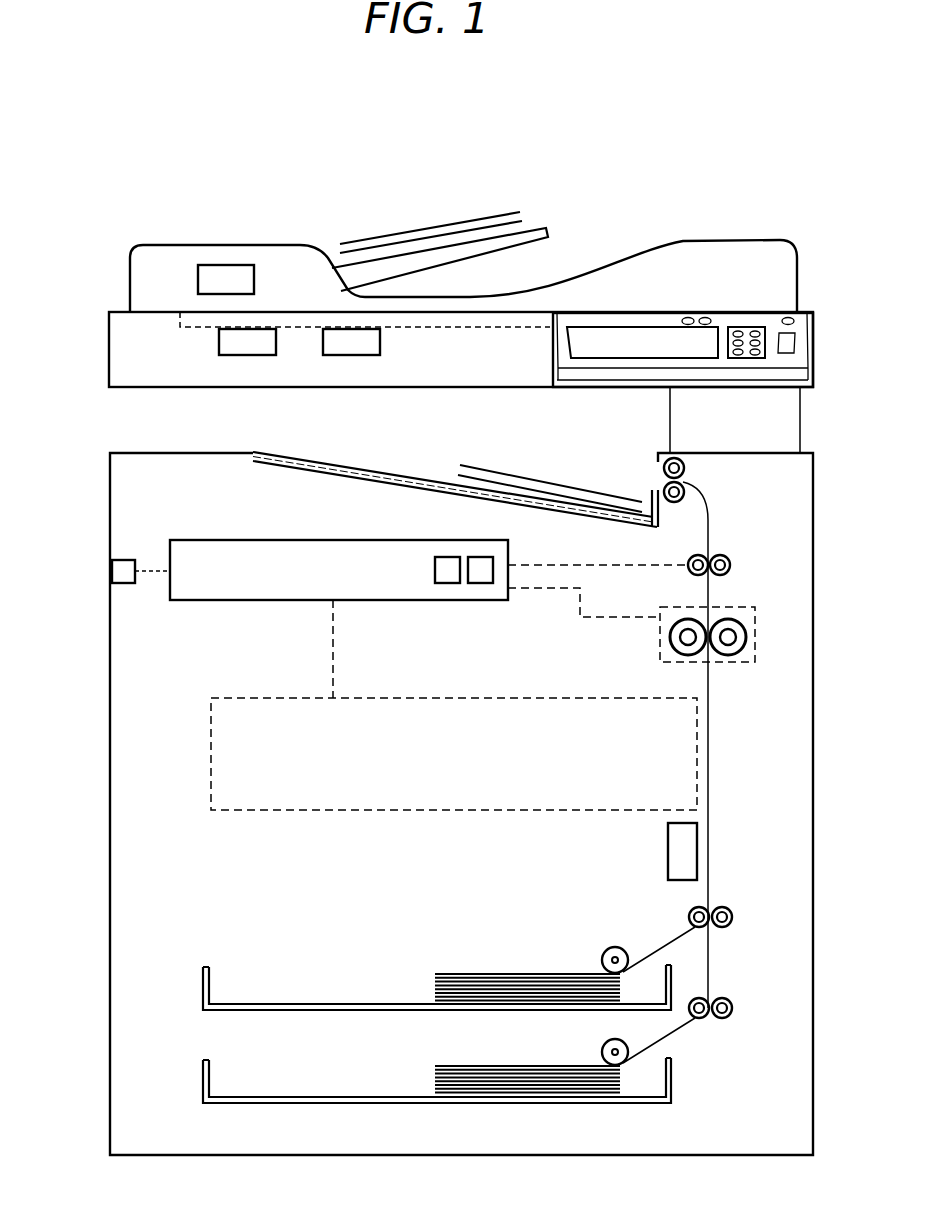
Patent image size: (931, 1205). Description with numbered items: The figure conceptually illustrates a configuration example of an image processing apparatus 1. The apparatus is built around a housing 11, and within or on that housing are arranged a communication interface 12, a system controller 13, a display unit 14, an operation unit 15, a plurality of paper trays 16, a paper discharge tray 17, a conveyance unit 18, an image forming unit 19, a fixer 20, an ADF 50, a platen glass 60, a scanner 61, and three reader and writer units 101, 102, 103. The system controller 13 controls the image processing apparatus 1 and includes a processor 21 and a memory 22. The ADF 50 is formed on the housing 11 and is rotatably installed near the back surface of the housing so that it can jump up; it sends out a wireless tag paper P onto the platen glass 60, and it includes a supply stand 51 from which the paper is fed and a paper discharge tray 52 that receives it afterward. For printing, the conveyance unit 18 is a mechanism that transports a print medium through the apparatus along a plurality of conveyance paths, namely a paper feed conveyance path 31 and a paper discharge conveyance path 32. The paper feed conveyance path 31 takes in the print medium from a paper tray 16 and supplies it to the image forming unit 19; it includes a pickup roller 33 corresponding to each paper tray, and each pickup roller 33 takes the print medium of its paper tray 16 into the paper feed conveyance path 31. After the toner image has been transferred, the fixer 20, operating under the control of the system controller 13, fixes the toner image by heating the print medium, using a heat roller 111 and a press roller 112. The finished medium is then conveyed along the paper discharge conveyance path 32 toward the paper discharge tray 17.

The image processing apparatus 1 is at (507, 134).
The housing 11 is at (110, 468).
The communication interface 12 is at (128, 560).
The system controller 13 is at (312, 540).
The display unit 14 is at (600, 327).
The operation unit 15 is at (748, 327).
The paper tray 16 is at (203, 984).
The paper discharge tray 17 is at (351, 466).
The conveyance unit 18 is at (729, 533).
The image forming unit 19 is at (243, 698).
The fixer 20 is at (713, 612).
The processor 21 is at (447, 583).
The memory 22 is at (481, 583).
The paper feed conveyance path 31 is at (711, 896).
The paper discharge conveyance path 32 is at (709, 518).
The pickup roller 33 is at (601, 952).
The ADF 50 is at (173, 245).
The supply stand 51 is at (537, 228).
The paper discharge tray 52 is at (430, 297).
The platen glass 60 is at (180, 327).
The scanner 61 is at (219, 345).
The reader and writer 101 is at (228, 265).
The reader and writer 102 is at (380, 342).
The reader and writer 103 is at (668, 852).
The heat roller 111 is at (670, 628).
The press roller 112 is at (736, 616).
The wireless tag paper P is at (366, 240).